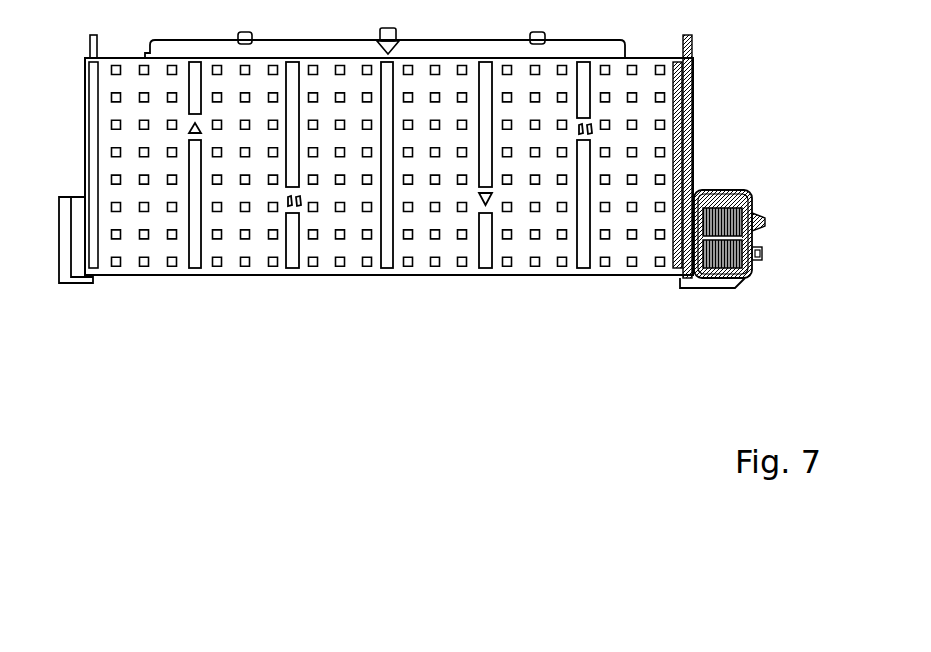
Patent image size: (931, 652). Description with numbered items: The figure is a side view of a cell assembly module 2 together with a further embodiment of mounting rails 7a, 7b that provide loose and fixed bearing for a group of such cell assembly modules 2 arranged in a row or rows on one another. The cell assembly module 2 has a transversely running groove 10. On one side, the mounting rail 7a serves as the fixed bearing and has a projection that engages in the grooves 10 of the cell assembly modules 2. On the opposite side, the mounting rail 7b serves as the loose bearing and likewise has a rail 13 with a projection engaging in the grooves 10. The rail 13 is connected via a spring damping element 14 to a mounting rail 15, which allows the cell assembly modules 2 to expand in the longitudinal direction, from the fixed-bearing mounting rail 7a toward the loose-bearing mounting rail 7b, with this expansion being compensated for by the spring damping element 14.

The cell assembly module 2 is at (352, 275).
The mounting rail 7a is at (75, 283).
The mounting rail 7b is at (708, 308).
The transversely running groove 10 is at (88, 237).
The rail 13 is at (698, 207).
The spring damping element 14 is at (736, 212).
The mounting rail 15 is at (748, 280).